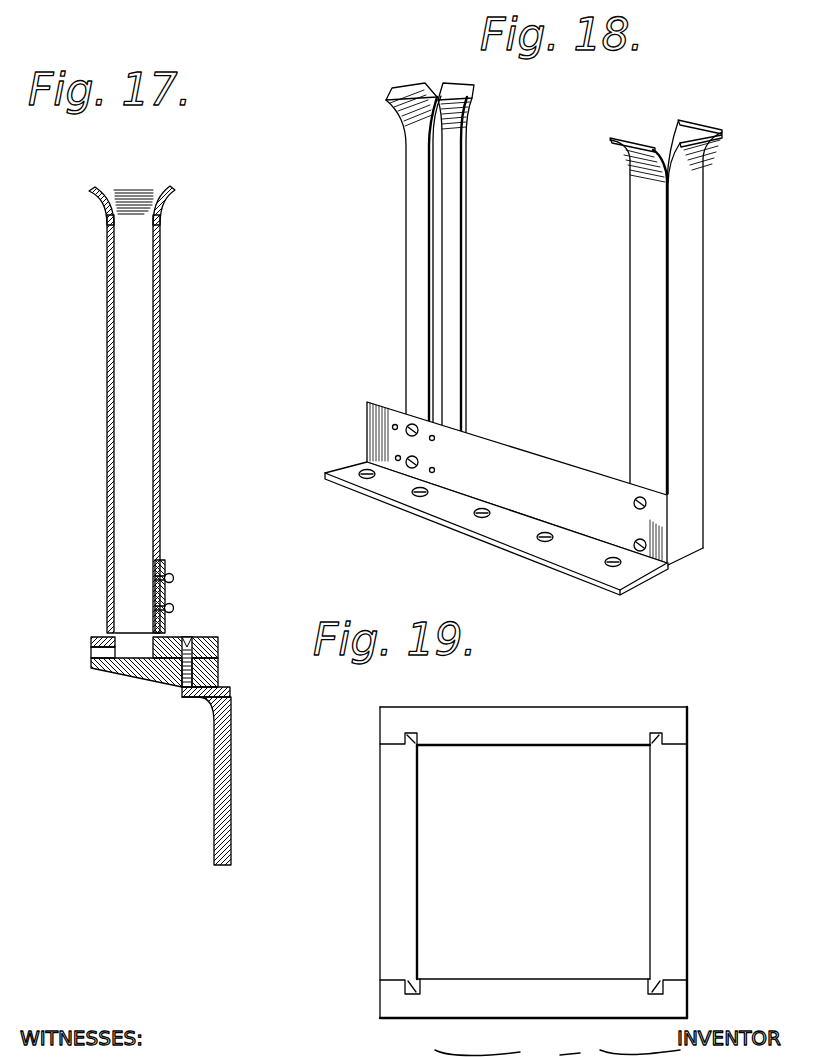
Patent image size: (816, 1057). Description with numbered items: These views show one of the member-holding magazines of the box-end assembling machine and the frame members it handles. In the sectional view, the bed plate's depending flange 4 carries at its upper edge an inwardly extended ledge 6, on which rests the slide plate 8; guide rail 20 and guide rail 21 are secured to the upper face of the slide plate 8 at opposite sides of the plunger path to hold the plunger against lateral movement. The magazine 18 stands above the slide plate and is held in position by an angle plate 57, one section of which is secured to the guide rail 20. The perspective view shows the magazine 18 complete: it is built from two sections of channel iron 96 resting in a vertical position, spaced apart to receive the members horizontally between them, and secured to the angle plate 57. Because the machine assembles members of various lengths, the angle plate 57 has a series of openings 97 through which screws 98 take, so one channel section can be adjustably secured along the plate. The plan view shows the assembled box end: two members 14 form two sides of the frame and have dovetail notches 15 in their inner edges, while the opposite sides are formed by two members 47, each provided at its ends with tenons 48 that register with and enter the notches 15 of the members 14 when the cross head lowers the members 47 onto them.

In FIG. 17, the depending flange 4 is at (232, 770).
In FIG. 17, the ledge 6 is at (196, 698).
In FIG. 17, the slide plate 8 is at (150, 680).
In FIG. 19, the frame member 14 is at (527, 717).
In FIG. 19, the dovetail notch 15 is at (413, 732).
In FIG. 17, the magazine 18 is at (107, 445).
In FIG. 18, the magazine 18 is at (453, 292).
In FIG. 17, the guide rail 20 is at (218, 655).
In FIG. 17, the guide rail 21 is at (90, 637).
In FIG. 19, the frame member 47 is at (383, 860).
In FIG. 19, the tenon 48 is at (402, 740).
In FIG. 17, the angle plate 57 is at (165, 627).
In FIG. 18, the angle plate 57 is at (535, 466).
In FIG. 17, the channel iron 96 is at (160, 442).
In FIG. 18, the channel iron 96 is at (405, 210).
In FIG. 17, the opening 97 is at (172, 608).
In FIG. 18, the opening 97 is at (435, 437).
In FIG. 17, the screw 98 is at (172, 578).
In FIG. 18, the screw 98 is at (408, 425).